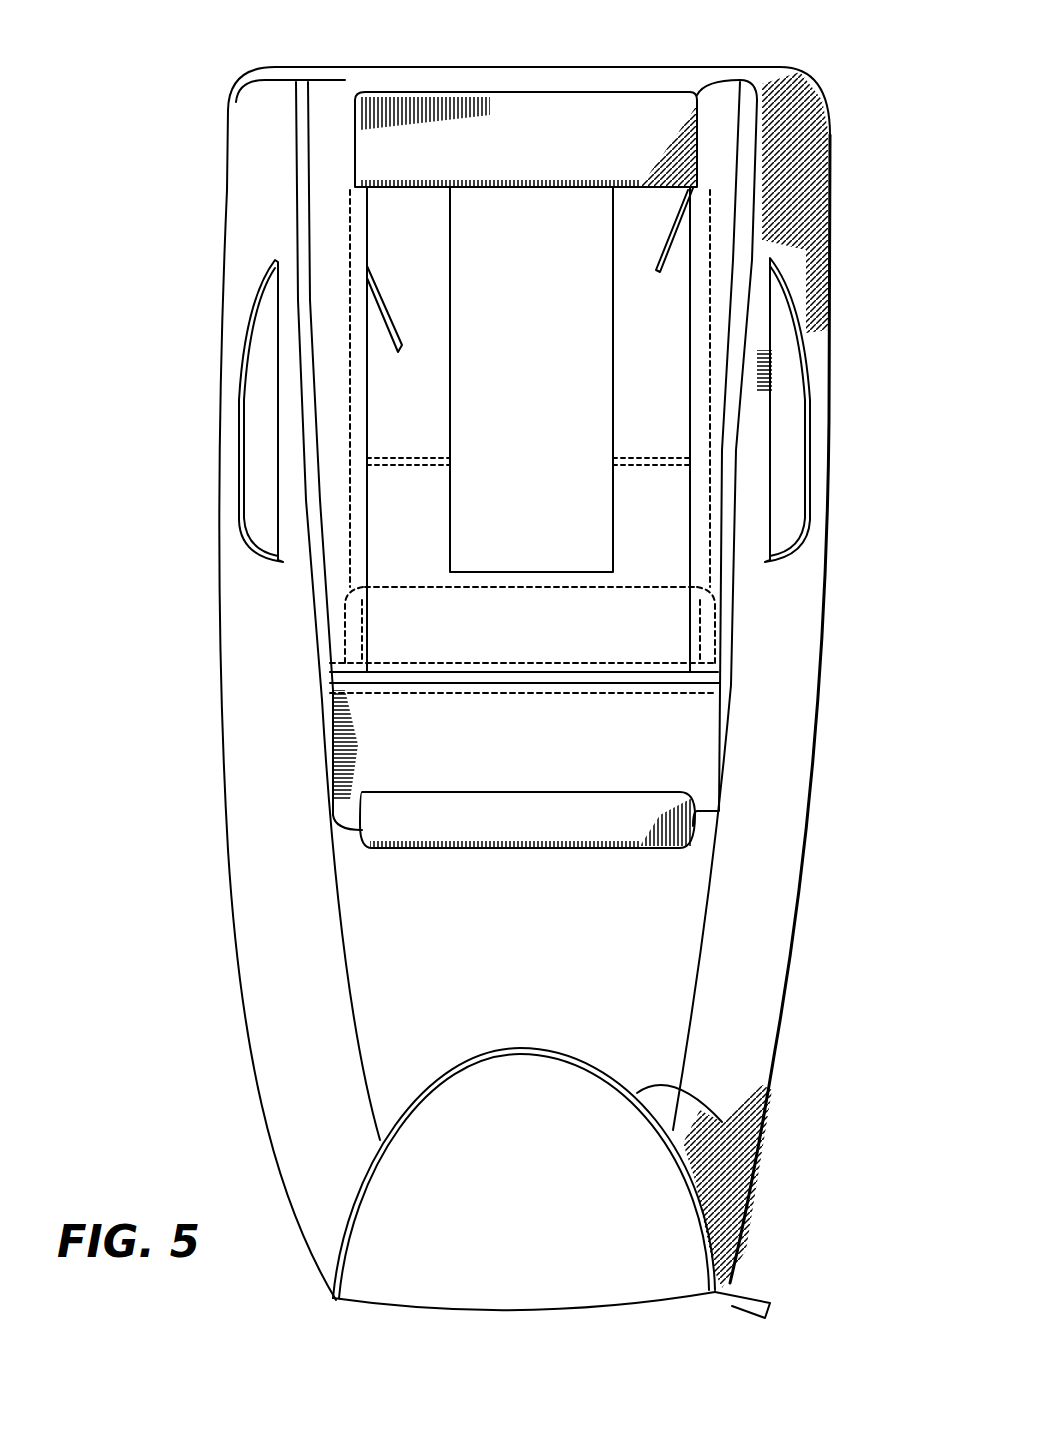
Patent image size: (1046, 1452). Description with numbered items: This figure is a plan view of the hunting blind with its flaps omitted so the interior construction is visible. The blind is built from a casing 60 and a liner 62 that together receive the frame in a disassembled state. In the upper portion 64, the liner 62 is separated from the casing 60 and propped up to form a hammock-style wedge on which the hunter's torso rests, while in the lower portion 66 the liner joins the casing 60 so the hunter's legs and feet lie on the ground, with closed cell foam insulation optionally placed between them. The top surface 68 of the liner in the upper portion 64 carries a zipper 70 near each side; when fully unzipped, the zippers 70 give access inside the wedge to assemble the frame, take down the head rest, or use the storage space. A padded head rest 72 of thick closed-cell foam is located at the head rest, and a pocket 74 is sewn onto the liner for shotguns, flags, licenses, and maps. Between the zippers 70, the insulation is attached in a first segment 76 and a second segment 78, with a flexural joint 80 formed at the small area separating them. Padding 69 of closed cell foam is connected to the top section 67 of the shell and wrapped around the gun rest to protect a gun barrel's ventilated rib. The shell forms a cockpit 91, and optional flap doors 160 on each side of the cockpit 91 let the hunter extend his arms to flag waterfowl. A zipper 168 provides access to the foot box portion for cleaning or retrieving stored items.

The casing 60 is at (766, 806).
The liner 62 is at (710, 240).
The upper portion 64 is at (870, 375).
The lower portion 66 is at (814, 1047).
The top section 67 is at (552, 962).
The top surface 68 is at (542, 500).
The padding 69 is at (395, 820).
The zipper 70 is at (690, 333).
The padded head rest 72 is at (540, 118).
The pocket 74 is at (600, 505).
The first segment 76 is at (655, 415).
The second segment 78 is at (657, 568).
The flexural joint 80 is at (415, 470).
The cockpit 91 is at (492, 240).
The flap door 160 is at (255, 412).
The zipper 168 is at (762, 1162).